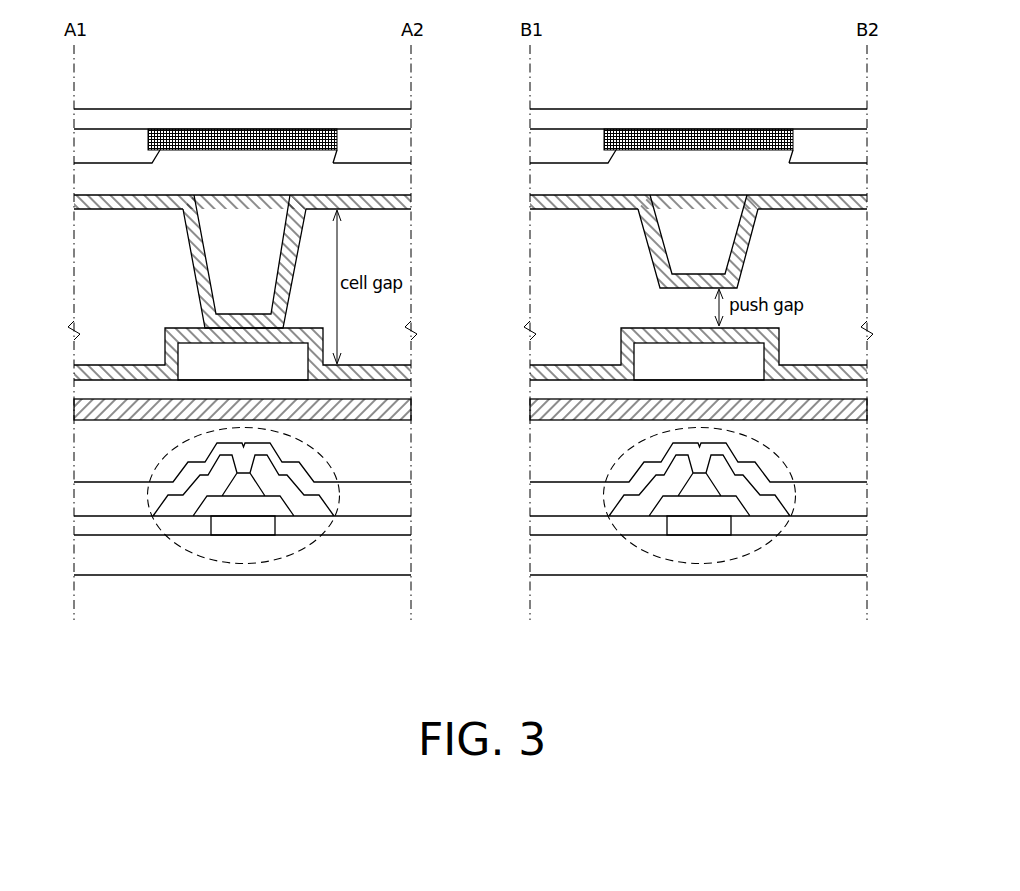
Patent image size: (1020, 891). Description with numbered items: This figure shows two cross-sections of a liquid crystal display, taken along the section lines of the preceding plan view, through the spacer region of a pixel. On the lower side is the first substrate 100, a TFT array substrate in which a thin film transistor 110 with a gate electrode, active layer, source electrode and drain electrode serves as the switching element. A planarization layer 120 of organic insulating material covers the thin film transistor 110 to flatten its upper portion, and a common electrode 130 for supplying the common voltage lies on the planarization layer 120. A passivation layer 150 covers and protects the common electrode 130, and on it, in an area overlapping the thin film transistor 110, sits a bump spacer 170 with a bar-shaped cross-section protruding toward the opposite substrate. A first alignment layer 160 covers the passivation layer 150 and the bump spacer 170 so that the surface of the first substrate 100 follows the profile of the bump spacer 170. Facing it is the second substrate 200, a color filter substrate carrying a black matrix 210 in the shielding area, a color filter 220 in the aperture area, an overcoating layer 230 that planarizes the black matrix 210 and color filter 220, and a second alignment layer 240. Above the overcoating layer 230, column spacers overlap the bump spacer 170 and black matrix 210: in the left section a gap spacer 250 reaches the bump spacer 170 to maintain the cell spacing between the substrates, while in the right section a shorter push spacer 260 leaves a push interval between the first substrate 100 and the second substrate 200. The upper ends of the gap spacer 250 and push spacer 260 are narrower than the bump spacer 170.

The first substrate 100 is at (390, 551).
The thin film transistor 110 is at (240, 563).
The planarization layer 120 is at (390, 457).
The common electrode 130 is at (390, 412).
The passivation layer 150 is at (390, 389).
The first alignment layer 160 is at (388, 374).
The bump spacer 170 is at (188, 357).
The second substrate 200 is at (390, 120).
The black matrix 210 is at (306, 128).
The color filter 220 is at (390, 149).
The overcoating layer 230 is at (390, 179).
The second alignment layer 240 is at (390, 200).
The gap spacer 250 is at (223, 266).
The push spacer 260 is at (678, 250).